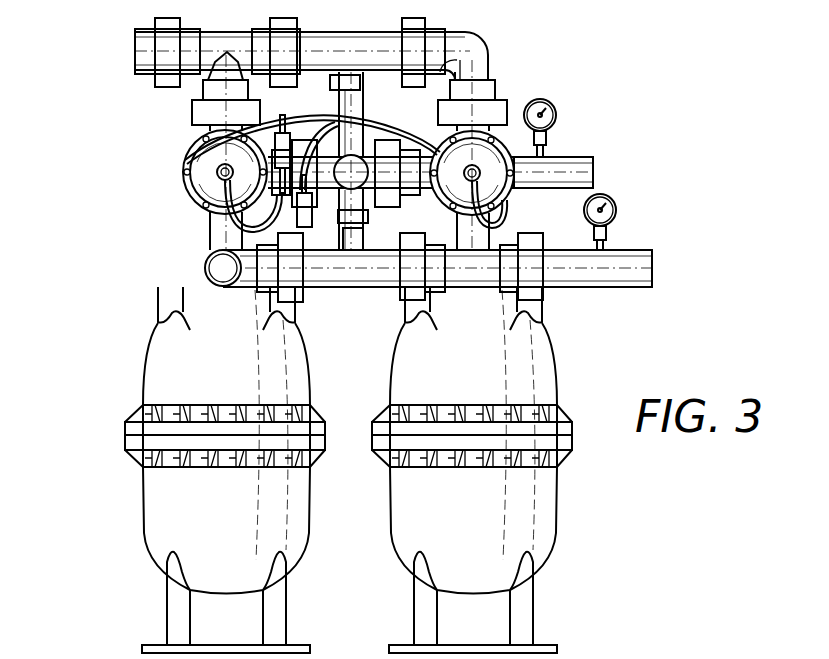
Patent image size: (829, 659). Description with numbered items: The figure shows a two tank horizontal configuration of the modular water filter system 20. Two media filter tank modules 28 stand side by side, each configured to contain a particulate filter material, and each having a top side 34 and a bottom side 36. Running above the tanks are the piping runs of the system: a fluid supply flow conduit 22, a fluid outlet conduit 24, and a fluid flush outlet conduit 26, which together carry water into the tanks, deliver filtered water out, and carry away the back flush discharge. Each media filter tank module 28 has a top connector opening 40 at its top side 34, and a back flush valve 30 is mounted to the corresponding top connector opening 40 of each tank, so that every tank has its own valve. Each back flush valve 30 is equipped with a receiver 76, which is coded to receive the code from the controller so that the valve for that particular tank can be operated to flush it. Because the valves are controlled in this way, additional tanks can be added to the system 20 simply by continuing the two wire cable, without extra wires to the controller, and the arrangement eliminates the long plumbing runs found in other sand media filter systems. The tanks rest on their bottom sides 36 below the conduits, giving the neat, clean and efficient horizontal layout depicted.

The modular water filter system 20 is at (612, 103).
The fluid supply flow conduit 22 is at (577, 157).
The fluid outlet conduit 24 is at (598, 283).
The fluid flush outlet conduit 26 is at (490, 52).
The media filter tank module 28 is at (160, 530).
The back flush valve 30 is at (185, 162).
The top side 34 is at (137, 302).
The bottom side 36 is at (148, 607).
The top connector opening 40 is at (205, 270).
The receiver 76 is at (165, 148).